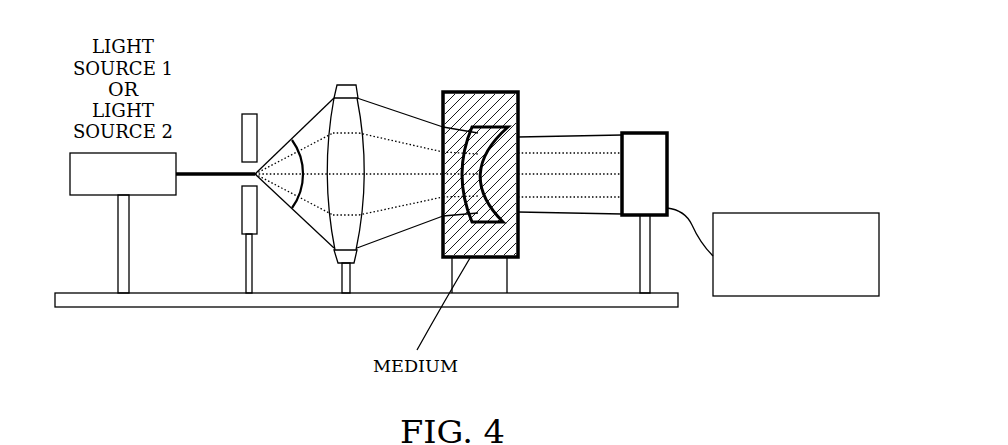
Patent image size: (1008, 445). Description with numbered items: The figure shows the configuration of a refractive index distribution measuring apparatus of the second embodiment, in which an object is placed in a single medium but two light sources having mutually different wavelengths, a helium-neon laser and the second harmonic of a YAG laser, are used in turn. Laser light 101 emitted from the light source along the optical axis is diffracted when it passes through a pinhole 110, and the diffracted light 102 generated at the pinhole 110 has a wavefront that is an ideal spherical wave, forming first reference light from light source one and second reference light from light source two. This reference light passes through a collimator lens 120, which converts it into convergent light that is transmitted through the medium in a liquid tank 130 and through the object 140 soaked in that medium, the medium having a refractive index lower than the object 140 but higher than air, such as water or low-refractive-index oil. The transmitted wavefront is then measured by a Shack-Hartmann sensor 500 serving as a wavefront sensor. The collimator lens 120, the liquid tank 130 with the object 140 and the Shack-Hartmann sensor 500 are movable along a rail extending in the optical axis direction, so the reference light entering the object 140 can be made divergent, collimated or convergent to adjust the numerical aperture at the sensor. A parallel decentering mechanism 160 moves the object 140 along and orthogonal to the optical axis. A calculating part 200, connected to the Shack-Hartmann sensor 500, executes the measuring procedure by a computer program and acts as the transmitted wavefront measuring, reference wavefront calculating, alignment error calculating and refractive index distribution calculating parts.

The laser light 101 is at (198, 178).
The diffracted light 102 is at (303, 181).
The pinhole 110 is at (241, 192).
The collimator lens 120 is at (341, 173).
The liquid tank 130 is at (442, 92).
The object 140 is at (514, 112).
The parallel decentering mechanism 160 is at (473, 282).
The Shack-Hartmann sensor 500 is at (657, 173).
The calculating part 200 is at (743, 296).